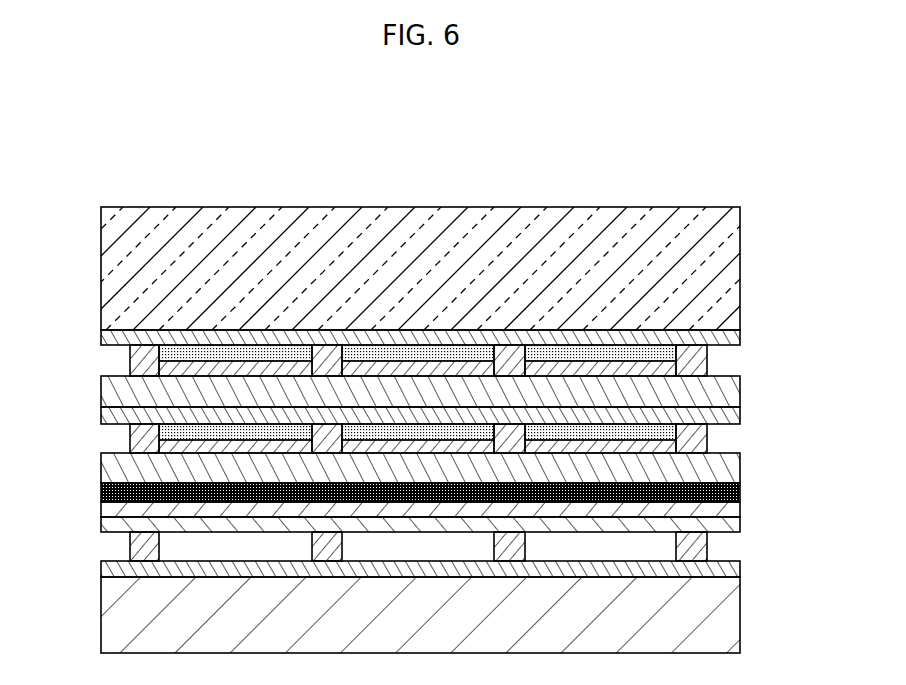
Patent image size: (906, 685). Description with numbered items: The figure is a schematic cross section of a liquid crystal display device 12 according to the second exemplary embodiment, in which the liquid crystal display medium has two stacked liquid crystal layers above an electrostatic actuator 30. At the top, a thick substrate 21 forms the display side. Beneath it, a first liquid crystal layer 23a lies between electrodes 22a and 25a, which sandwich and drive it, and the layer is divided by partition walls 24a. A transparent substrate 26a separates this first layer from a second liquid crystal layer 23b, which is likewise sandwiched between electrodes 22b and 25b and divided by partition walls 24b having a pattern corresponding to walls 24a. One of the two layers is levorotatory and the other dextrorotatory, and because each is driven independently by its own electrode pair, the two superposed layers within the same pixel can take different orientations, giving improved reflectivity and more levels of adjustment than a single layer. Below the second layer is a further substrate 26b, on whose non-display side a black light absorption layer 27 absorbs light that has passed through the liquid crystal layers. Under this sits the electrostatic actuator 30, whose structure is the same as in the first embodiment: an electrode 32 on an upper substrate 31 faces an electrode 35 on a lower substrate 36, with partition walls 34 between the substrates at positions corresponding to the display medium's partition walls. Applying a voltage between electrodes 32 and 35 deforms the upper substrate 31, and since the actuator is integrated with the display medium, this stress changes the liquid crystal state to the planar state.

The liquid crystal display device 12 is at (710, 170).
The cover substrate 21 is at (733, 240).
The electrode 22a is at (740, 338).
The electrode 22b is at (735, 416).
The first liquid crystal layer 23a is at (130, 351).
The partition walls 24a is at (130, 364).
The electrode 25a is at (707, 365).
The transparent substrate 26a is at (733, 393).
The second liquid crystal layer 23b is at (130, 430).
The partition walls 24b is at (130, 443).
The electrode 25b is at (707, 445).
The second adhesive layer 26b is at (733, 472).
The light absorption layer 27 is at (742, 493).
The electrostatic actuator 30 is at (91, 500).
The upper substrate 31 is at (735, 523).
The electrode 32 is at (735, 509).
The partition walls 34 is at (707, 543).
The electrode 35 is at (735, 568).
The substrate 36 is at (733, 622).